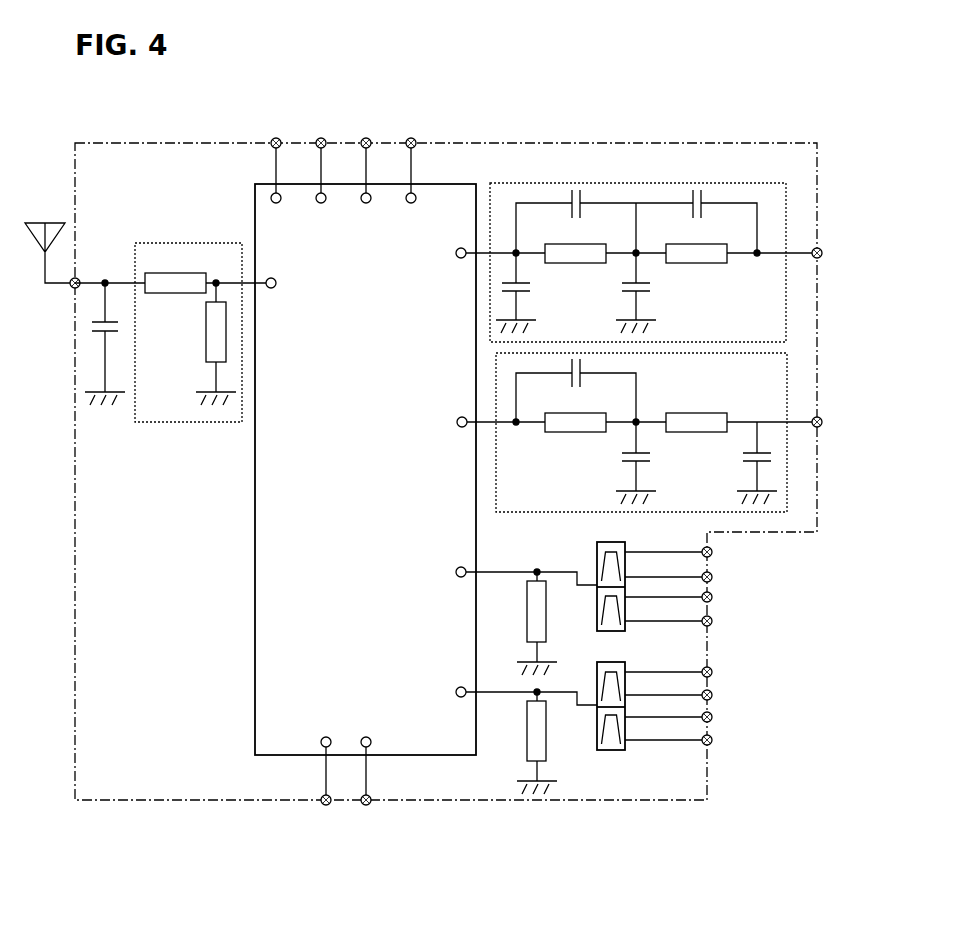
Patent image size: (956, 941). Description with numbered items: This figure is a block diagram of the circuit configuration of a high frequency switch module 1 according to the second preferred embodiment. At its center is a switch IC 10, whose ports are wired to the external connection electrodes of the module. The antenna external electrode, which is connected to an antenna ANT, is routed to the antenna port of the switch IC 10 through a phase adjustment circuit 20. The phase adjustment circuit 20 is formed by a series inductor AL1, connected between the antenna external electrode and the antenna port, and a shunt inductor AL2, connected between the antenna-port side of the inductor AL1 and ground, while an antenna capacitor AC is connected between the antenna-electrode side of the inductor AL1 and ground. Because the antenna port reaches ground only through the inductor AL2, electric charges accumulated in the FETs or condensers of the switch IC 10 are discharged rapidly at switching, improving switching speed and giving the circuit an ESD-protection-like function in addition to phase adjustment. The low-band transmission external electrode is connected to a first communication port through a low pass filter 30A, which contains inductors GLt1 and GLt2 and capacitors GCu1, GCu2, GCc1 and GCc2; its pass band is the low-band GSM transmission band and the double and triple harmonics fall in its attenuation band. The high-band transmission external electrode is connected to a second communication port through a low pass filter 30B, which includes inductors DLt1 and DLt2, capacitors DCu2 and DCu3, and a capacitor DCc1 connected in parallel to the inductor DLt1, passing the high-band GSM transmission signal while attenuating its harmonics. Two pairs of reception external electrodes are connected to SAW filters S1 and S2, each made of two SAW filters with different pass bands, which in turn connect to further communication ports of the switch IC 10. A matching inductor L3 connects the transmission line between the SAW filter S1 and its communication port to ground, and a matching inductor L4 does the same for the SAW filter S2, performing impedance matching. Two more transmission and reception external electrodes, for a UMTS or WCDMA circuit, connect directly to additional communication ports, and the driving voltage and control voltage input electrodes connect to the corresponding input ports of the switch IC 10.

The high frequency switch module 1 is at (97, 143).
The switch IC 10 is at (255, 200).
The phase adjustment circuit 20 is at (150, 431).
The low pass filter 30A is at (786, 183).
The low pass filter 30B is at (504, 513).
The antenna ANT is at (50, 245).
The antenna capacitor AC is at (107, 342).
The inductor AL1 is at (175, 274).
The inductor AL2 is at (205, 342).
The capacitor GCc1 is at (555, 203).
The capacitor GCc2 is at (717, 203).
The inductor GLt1 is at (575, 245).
The inductor GLt2 is at (696, 245).
The capacitor GCu1 is at (526, 293).
The capacitor GCu2 is at (646, 293).
The capacitor DCc1 is at (596, 372).
The inductor DLt1 is at (575, 414).
The inductor DLt2 is at (696, 414).
The capacitor DCu2 is at (646, 463).
The capacitor DCu3 is at (745, 463).
The inductor L3 is at (543, 622).
The inductor L4 is at (543, 741).
The SAW filter S1 is at (611, 595).
The SAW filter S2 is at (611, 715).